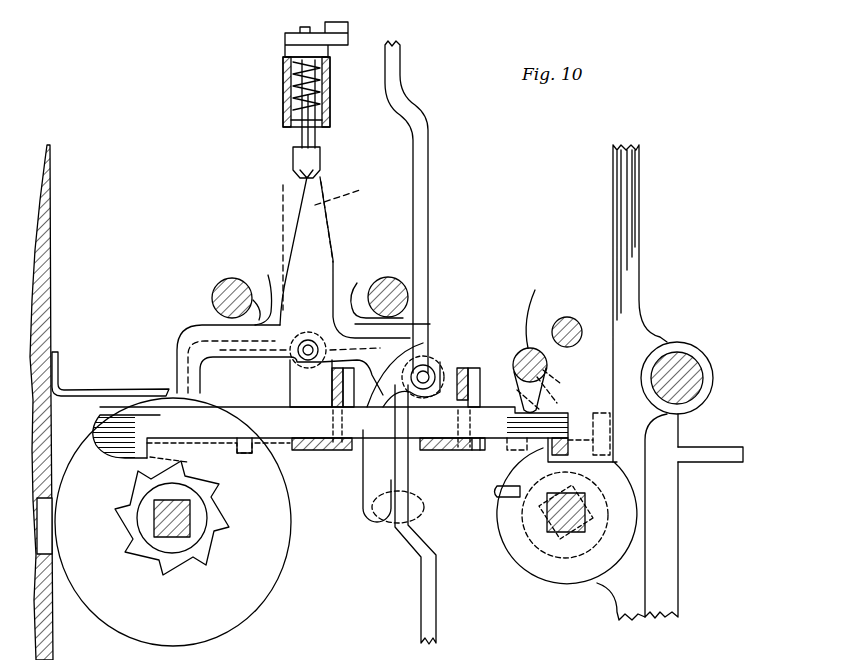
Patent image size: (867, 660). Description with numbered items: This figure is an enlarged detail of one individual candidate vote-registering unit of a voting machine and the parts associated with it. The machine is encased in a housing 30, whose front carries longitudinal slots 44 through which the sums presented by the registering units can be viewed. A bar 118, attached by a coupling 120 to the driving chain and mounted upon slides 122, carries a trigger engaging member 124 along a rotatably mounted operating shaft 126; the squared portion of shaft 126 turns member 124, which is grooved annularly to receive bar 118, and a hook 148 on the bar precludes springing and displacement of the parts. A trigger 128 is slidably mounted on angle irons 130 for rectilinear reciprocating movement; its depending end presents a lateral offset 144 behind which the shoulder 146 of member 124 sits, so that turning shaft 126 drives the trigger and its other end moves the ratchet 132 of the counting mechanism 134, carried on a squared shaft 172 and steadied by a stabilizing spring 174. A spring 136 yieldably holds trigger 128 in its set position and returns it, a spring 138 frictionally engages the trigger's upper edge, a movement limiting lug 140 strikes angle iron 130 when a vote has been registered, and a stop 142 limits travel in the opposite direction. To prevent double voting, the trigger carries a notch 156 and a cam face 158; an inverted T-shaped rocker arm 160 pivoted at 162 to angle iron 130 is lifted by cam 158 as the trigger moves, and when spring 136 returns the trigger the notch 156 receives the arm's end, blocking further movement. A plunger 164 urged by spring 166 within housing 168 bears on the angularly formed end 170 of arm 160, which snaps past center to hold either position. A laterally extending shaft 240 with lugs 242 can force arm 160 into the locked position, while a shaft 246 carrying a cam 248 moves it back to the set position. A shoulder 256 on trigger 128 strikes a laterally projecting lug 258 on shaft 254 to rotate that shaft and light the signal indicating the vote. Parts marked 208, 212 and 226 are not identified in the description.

The housing 30 is at (47, 224).
The longitudinal slots 44 is at (53, 532).
The bar 118 is at (645, 578).
The coupling 120 is at (715, 452).
The slides 122 is at (688, 362).
The trigger engaging member 124 is at (565, 580).
The operating shaft 126 is at (555, 528).
The trigger 128 is at (135, 410).
The angle iron 130 is at (284, 38).
The ratchet 132 is at (205, 548).
The vote-registering and counting mechanism 134 is at (215, 632).
The spring 136 is at (373, 516).
The spring 138 is at (285, 403).
The movement limiting lug 140 is at (246, 456).
The stop 142 is at (408, 478).
The lateral offset 144 is at (565, 440).
The shoulder 146 is at (547, 445).
The hook 148 is at (500, 497).
The notch 156 is at (170, 420).
The cam face 158 is at (430, 352).
The rocker arm 160 is at (315, 280).
The pivotal point 162 is at (310, 340).
The plunger 164 is at (316, 137).
The spring 166 is at (322, 90).
The housing 168 is at (283, 102).
The angularly formed free end 170 is at (326, 178).
The squared shaft 172 is at (165, 538).
The stabilizing spring 174 is at (122, 392).
The rod 208 is at (430, 148).
The pin 212 is at (567, 317).
The base 226 is at (94, 654).
The laterally extending shaft 240 is at (214, 292).
The lugs 242 is at (266, 290).
The shaft 246 is at (396, 308).
The cam 248 is at (360, 290).
The shaft 254 is at (526, 308).
The shoulder 256 is at (515, 372).
The laterally projecting lug 258 is at (548, 385).